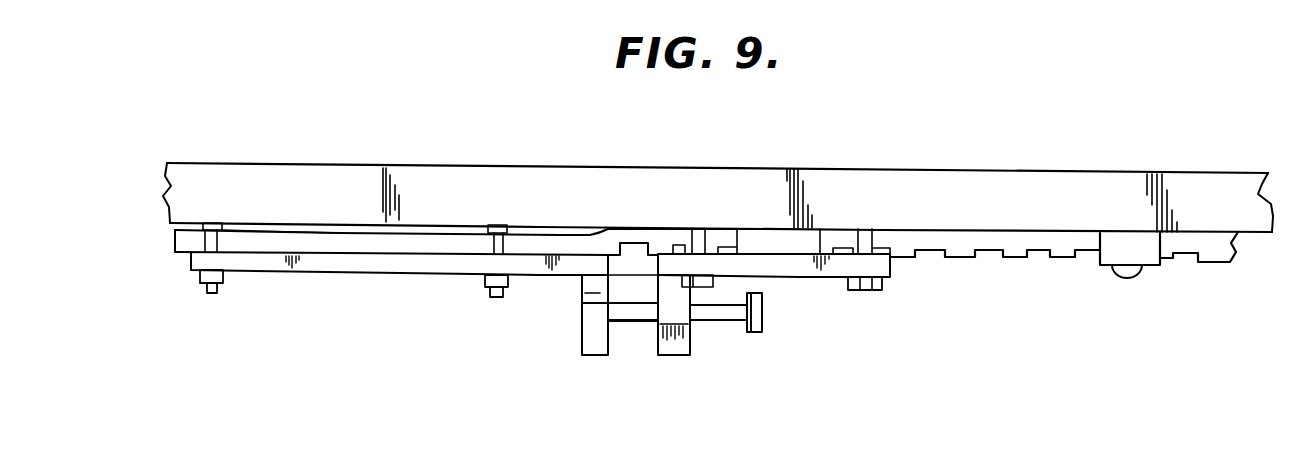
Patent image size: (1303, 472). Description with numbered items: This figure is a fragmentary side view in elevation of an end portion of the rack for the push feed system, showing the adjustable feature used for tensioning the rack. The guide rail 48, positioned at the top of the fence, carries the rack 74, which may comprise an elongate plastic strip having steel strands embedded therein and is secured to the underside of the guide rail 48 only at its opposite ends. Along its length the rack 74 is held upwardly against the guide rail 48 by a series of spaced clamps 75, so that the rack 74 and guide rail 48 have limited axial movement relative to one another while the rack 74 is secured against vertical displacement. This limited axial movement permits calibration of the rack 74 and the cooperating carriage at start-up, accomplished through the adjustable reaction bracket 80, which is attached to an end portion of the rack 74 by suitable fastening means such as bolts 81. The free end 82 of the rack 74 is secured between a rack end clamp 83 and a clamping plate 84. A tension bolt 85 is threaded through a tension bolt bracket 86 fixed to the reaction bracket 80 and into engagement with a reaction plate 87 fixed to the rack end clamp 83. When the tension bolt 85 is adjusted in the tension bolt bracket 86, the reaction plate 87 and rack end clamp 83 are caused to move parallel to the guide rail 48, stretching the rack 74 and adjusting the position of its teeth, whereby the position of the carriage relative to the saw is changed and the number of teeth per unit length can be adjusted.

The guide rail 48 is at (1043, 183).
The rack 74 is at (1012, 260).
The clamps 75 is at (1110, 258).
The adjustable reaction bracket 80 is at (795, 275).
The bolts 81 is at (878, 286).
The free end of the rack 82 is at (300, 245).
The rack end clamp 83 is at (265, 272).
The clamping plate 84 is at (343, 233).
The tension bolt 85 is at (717, 312).
The tension bolt bracket 86 is at (672, 355).
The reaction plate 87 is at (597, 355).